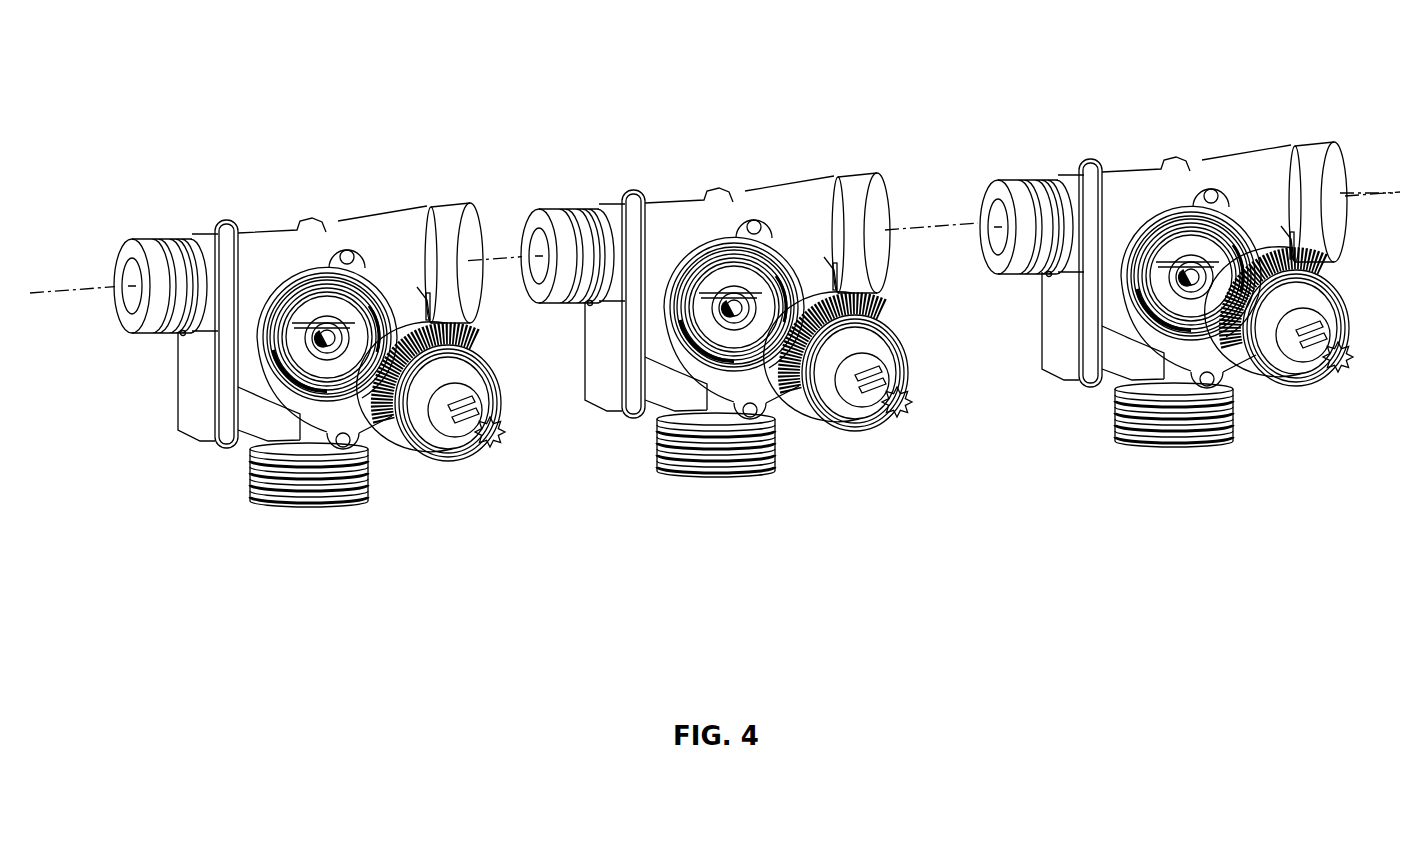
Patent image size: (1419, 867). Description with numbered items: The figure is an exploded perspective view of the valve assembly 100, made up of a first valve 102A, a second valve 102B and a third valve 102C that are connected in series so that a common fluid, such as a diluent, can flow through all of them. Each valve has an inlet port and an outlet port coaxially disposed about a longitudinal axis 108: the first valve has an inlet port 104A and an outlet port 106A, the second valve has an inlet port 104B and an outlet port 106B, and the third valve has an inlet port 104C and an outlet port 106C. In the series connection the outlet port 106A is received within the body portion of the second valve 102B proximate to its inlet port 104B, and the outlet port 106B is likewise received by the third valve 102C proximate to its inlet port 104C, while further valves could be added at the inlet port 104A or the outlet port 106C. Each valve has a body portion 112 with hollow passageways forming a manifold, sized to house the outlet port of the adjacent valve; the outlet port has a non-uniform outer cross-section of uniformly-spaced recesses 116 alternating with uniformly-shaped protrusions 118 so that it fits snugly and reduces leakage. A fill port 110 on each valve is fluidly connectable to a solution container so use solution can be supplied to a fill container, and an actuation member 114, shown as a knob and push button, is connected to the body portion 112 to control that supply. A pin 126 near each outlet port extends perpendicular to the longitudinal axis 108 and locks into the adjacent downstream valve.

The valve assembly 100 is at (1080, 46).
The first valve 102A is at (1190, 156).
The second valve 102B is at (807, 180).
The third valve 102C is at (391, 212).
The inlet port of the first valve 104A is at (1340, 227).
The inlet port of the second valve 104B is at (867, 177).
The inlet port of the third valve 104C is at (460, 209).
The outlet port of the first valve 106A is at (998, 181).
The outlet port of the second valve 106B is at (521, 263).
The outlet port of the third valve 106C is at (126, 250).
The longitudinal axis 108 is at (1370, 193).
The fill port 110 is at (359, 508).
The body portion 112 is at (264, 229).
The actuation member 114 is at (462, 462).
The recesses 116 is at (166, 235).
The protrusions 118 is at (152, 237).
The pin 126 is at (178, 346).